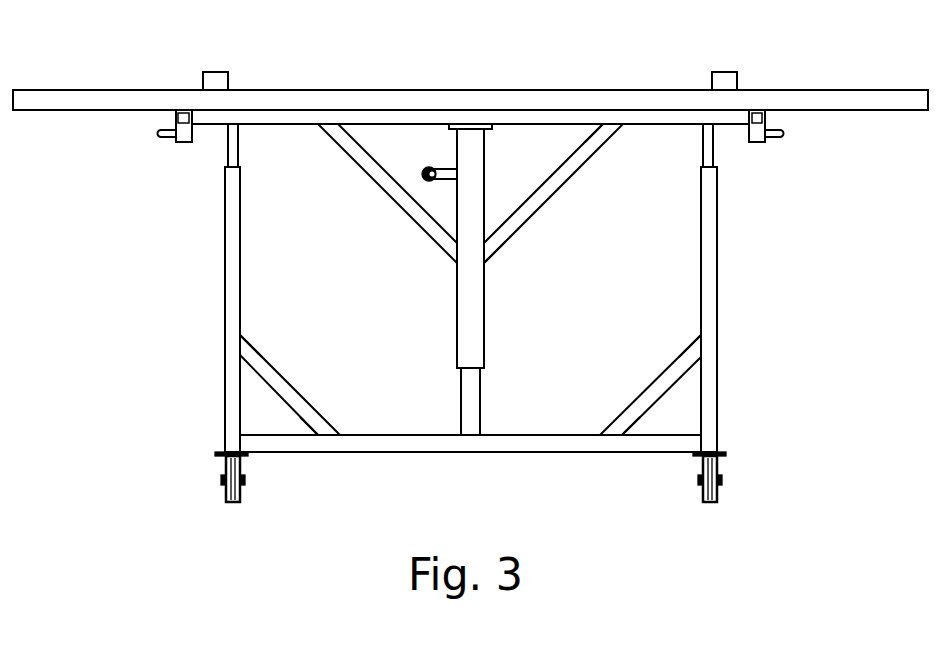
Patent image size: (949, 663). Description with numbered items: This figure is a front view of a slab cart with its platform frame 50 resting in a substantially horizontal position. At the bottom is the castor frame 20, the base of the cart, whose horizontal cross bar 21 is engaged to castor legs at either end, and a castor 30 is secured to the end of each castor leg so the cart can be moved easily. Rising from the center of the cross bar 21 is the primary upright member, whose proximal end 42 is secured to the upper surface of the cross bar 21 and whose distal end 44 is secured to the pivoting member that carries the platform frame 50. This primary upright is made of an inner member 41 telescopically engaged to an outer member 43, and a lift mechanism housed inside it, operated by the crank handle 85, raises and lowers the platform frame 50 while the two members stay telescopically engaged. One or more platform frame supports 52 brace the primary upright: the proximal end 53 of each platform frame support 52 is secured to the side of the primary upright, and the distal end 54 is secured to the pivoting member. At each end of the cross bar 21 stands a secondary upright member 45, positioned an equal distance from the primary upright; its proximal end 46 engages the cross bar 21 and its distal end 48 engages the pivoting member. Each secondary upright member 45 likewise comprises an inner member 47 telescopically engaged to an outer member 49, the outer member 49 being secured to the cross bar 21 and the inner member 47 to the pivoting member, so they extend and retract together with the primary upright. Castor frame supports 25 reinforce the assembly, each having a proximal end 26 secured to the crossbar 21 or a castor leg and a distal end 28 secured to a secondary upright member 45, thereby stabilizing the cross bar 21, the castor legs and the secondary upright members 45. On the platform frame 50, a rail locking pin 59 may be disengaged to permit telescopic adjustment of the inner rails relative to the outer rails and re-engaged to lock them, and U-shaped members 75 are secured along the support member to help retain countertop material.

The castor frame 20 is at (517, 443).
The cross bar 21 is at (413, 443).
The castor frame support 25 is at (287, 390).
The proximal end of castor frame support 26 is at (325, 423).
The distal end of castor frame support 28 is at (250, 352).
The castor 30 is at (227, 493).
The inner member 41 is at (470, 397).
The proximal end of primary upright member 42 is at (470, 417).
The outer member 43 is at (475, 168).
The distal end of primary upright member 44 is at (467, 151).
The secondary upright member 45 is at (228, 243).
The proximal end of secondary upright member 46 is at (233, 424).
The inner member 47 is at (229, 147).
The distal end of secondary upright member 48 is at (233, 132).
The outer member 49 is at (233, 370).
The platform frame 50 is at (470, 97).
The platform frame support 52 is at (550, 193).
The proximal end of platform frame support 53 is at (497, 253).
The distal end of platform frame support 54 is at (597, 145).
The rail locking pin 59 is at (780, 137).
The U-shaped member 75 is at (215, 78).
The crank handle 85 is at (424, 172).